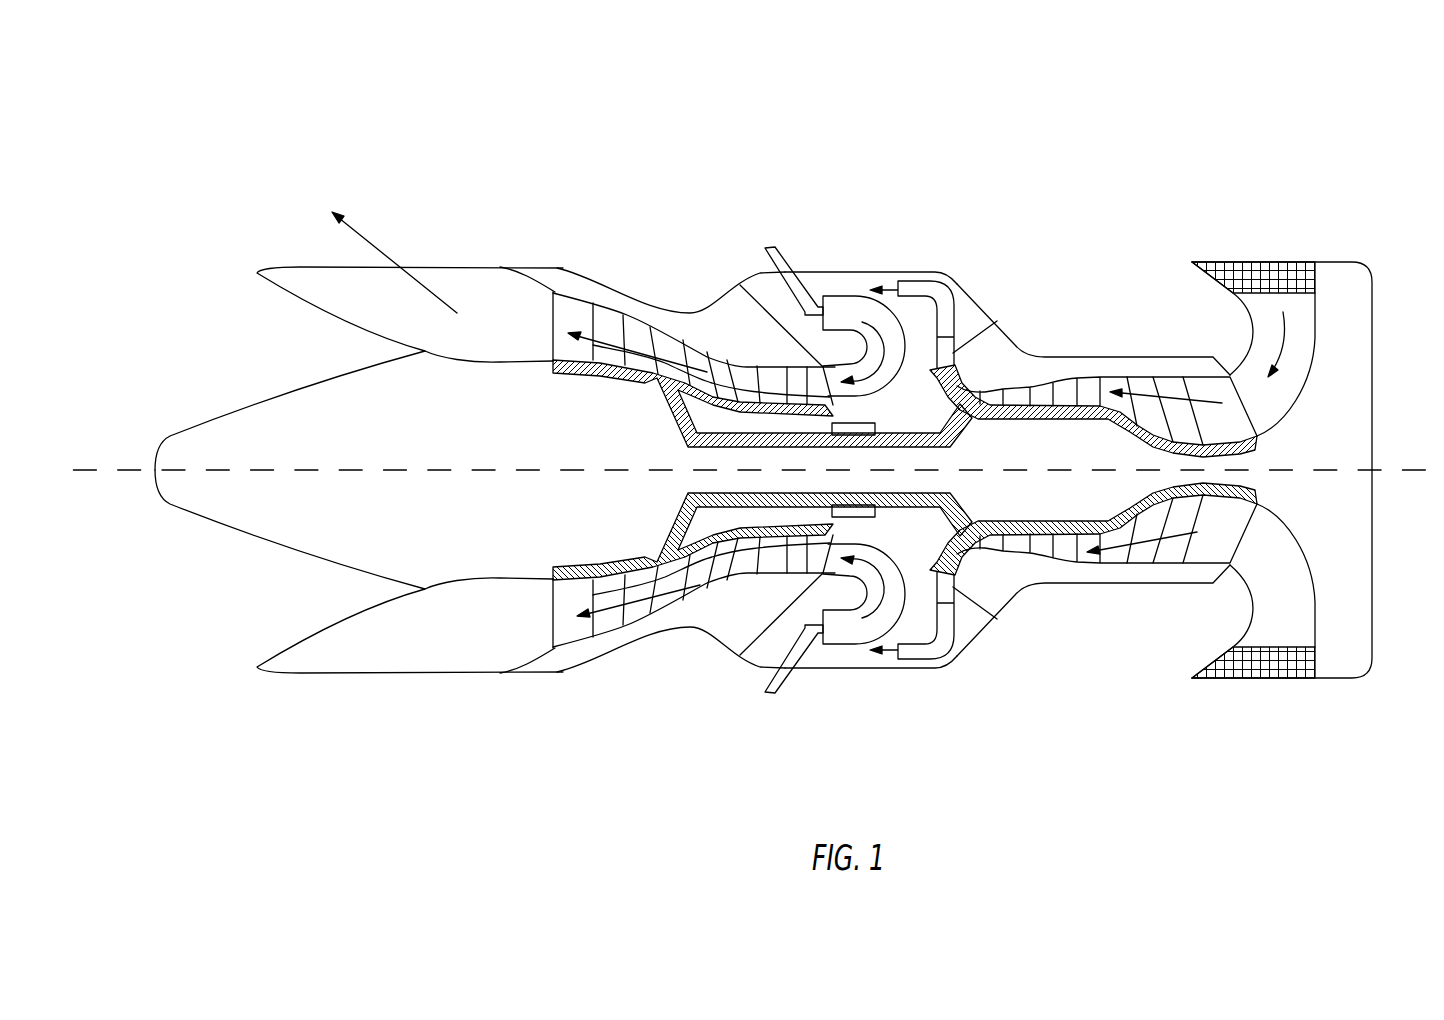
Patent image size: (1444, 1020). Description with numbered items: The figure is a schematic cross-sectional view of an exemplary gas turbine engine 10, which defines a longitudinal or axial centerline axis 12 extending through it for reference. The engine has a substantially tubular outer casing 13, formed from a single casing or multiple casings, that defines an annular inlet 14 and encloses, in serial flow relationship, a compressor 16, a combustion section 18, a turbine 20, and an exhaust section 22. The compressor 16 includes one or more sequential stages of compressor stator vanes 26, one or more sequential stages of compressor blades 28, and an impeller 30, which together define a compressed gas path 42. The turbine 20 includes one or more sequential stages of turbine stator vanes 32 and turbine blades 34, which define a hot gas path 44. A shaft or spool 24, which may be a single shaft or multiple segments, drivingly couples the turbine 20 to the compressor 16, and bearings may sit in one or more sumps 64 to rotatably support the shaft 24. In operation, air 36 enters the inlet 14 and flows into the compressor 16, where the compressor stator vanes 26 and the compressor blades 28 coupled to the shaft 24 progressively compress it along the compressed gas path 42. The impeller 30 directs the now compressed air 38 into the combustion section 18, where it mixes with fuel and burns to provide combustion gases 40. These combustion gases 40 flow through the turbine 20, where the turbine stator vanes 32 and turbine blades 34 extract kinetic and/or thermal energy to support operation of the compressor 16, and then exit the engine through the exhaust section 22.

The gas turbine engine 10 is at (248, 140).
The longitudinal or axial centerline axis 12 is at (93, 462).
The outer casing 13 is at (840, 272).
The annular inlet 14 is at (1273, 678).
The compressor 16 is at (1090, 600).
The combustion section 18 is at (848, 661).
The turbine 20 is at (705, 622).
The exhaust section 22 is at (412, 705).
The shaft or spool 24 is at (683, 514).
The compressor stator vanes 26 is at (1170, 553).
The compressor blades 28 is at (1142, 553).
The impeller 30 is at (957, 383).
The turbine stator vanes 32 is at (773, 565).
The turbine blades 34 is at (750, 576).
The air 36 is at (367, 243).
The compressed air 38 is at (923, 281).
The combustion gases 40 is at (608, 337).
The compressed gas path 42 is at (1117, 540).
The hot gas path 44 is at (607, 605).
The sumps 64 is at (878, 509).